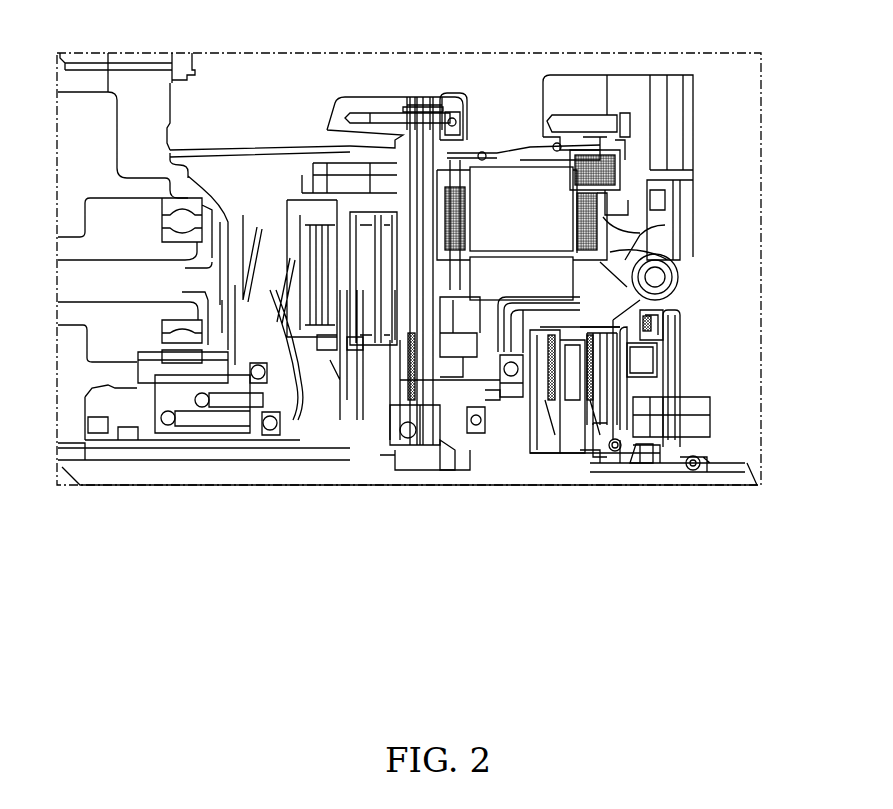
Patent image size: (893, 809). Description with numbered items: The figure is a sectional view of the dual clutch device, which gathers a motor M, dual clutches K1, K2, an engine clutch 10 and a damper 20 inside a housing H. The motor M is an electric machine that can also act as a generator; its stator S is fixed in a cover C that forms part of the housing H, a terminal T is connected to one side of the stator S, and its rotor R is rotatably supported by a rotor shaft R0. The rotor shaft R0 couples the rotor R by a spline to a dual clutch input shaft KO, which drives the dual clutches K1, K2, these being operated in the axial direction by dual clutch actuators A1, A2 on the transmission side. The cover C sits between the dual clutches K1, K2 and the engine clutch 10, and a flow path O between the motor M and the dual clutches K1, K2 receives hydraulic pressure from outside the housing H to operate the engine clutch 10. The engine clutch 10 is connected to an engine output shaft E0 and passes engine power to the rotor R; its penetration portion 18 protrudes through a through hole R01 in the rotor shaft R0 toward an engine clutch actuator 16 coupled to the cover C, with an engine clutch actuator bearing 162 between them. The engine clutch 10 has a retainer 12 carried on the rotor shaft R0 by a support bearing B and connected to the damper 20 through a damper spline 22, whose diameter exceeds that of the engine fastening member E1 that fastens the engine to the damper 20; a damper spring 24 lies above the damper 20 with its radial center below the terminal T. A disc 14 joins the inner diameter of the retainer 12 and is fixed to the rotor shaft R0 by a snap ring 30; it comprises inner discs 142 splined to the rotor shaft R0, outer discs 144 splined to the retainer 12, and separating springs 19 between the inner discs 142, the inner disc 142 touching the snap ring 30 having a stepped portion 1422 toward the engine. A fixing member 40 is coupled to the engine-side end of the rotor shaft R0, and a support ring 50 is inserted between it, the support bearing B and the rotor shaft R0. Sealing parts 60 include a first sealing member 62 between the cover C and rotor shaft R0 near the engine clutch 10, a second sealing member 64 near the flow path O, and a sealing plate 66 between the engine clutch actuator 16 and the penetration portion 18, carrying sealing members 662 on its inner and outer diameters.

The housing H is at (360, 102).
The cover C is at (463, 142).
The flow path O is at (423, 130).
The dual clutch K2 is at (307, 233).
The dual clutch K1 is at (382, 233).
The stator S is at (522, 225).
The rotor R is at (521, 278).
The motor M is at (518, 160).
The terminal T is at (610, 178).
The outer disc 144 is at (627, 287).
The damper spring 24 is at (680, 275).
The engine clutch 10 is at (680, 307).
The retainer 12 is at (645, 328).
The damper 20 is at (655, 378).
The inner disc 142 is at (600, 400).
The damper spline 22 is at (682, 397).
The engine fastening member E1 is at (680, 413).
The through hole R01 is at (633, 418).
The stepped portion 1422 is at (690, 470).
The support bearing B is at (615, 467).
The fixing member 40 is at (647, 465).
The support ring 50 is at (628, 468).
The engine output shaft E0 is at (740, 480).
The penetration portion 18 is at (530, 407).
The separating spring 19 is at (567, 413).
The snap ring 30 is at (590, 413).
The first sealing member 62 is at (510, 400).
The sealing plate 66 is at (503, 427).
The second sealing member 64 is at (413, 430).
The sealing member 662 is at (430, 448).
The sealing parts 60 is at (535, 533).
The dual clutch input shaft KO is at (400, 487).
The engine clutch actuator 16 is at (395, 400).
The engine clutch actuator bearing 162 is at (420, 395).
The dual clutch actuator A2 is at (208, 427).
The dual clutch actuator A1 is at (410, 352).
The rotor shaft R0 is at (250, 372).
The disc 14 is at (845, 545).